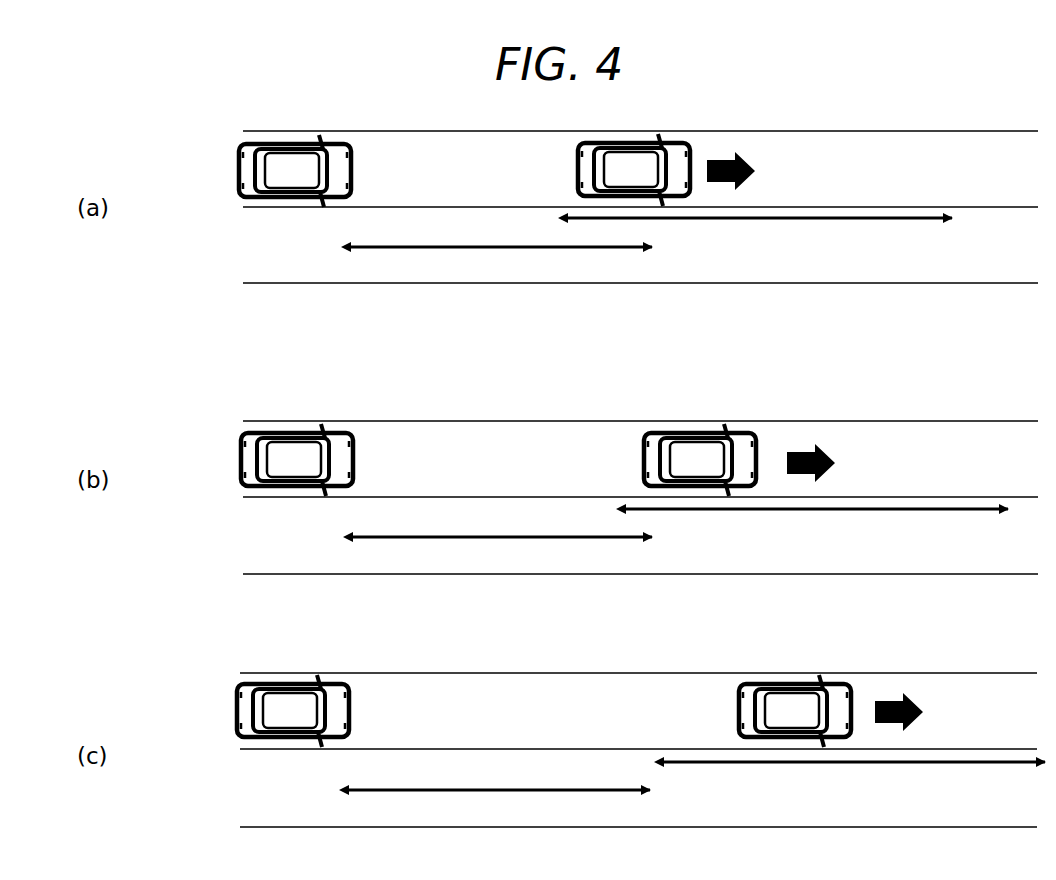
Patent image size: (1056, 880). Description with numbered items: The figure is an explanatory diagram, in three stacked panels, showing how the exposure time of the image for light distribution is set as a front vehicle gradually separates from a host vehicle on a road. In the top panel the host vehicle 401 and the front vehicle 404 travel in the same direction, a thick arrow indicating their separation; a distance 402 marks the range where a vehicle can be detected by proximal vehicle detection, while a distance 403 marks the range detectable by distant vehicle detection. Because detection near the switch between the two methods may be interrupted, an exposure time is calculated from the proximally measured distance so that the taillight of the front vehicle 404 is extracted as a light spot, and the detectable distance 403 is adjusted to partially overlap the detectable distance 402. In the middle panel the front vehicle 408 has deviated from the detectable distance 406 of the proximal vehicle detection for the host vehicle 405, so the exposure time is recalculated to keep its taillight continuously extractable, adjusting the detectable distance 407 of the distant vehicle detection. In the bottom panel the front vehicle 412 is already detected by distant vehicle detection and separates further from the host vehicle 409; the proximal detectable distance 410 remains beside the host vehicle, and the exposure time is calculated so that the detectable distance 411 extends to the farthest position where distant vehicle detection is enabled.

The host vehicle 401 is at (238, 172).
The detectable distance of proximal vehicle detection 402 is at (505, 245).
The detectable distance of distant vehicle detection 403 is at (893, 217).
The front vehicle 404 is at (577, 170).
The host vehicle 405 is at (240, 462).
The detectable distance of proximal vehicle detection 406 is at (505, 536).
The detectable distance of distant vehicle detection 407 is at (910, 507).
The front vehicle 408 is at (643, 465).
The host vehicle 409 is at (236, 703).
The detectable distance of proximal vehicle detection 410 is at (500, 788).
The detectable distance of distant vehicle detection 411 is at (990, 760).
The front vehicle 412 is at (738, 720).